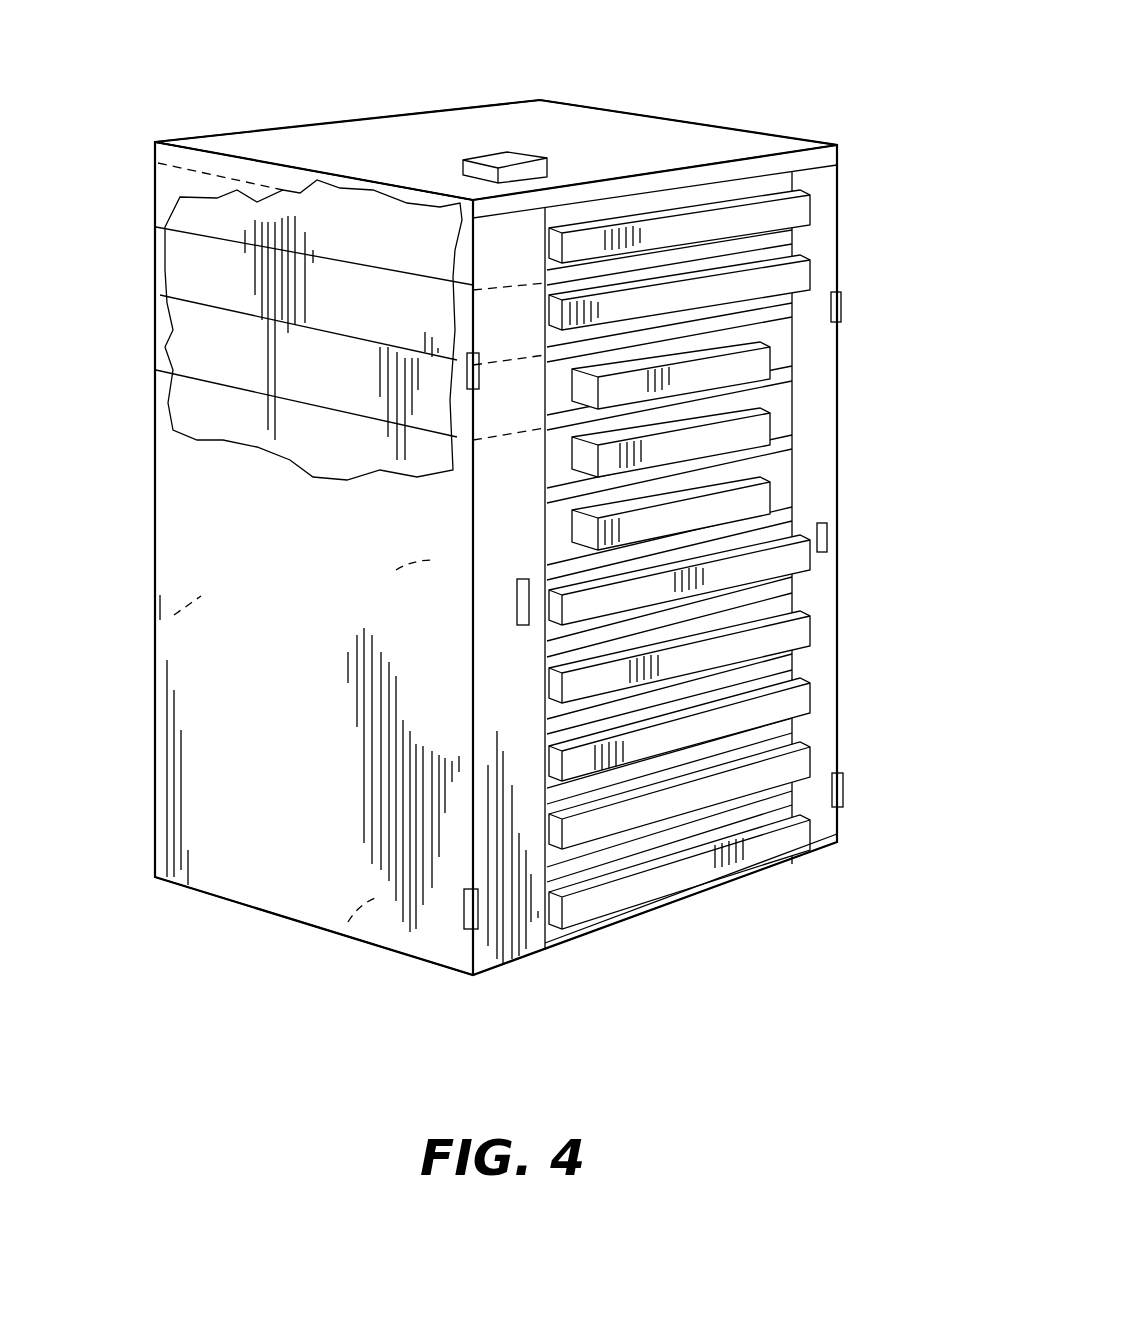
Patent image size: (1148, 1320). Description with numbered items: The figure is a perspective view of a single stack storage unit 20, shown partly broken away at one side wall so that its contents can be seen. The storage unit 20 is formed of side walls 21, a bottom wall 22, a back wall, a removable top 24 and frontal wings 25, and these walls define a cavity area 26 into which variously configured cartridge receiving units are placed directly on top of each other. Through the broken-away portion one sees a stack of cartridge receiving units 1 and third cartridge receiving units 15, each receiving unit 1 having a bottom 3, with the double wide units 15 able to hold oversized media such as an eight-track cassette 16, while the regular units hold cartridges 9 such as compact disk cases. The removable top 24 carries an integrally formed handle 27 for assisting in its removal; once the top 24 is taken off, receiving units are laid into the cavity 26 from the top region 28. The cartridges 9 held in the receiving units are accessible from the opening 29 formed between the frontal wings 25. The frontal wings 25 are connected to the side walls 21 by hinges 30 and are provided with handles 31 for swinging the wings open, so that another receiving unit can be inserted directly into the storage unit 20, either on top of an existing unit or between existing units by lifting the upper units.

The cartridge receiving unit 1 is at (200, 270).
The bottom 3 is at (162, 618).
The cartridge 9 is at (797, 280).
The third cartridge receiving unit 15 is at (778, 337).
The 8-track cassette 16 is at (752, 425).
The storage unit 20 is at (723, 93).
The side walls 21 is at (265, 719).
The bottom wall 22 is at (348, 922).
The removable top 24 is at (417, 137).
The frontal wings 25 is at (520, 930).
The cavity area 26 is at (396, 570).
The handle 27 is at (515, 157).
The top region 28 is at (755, 147).
The opening 29 is at (680, 895).
The hinges 30 is at (464, 915).
The handles 31 is at (517, 604).